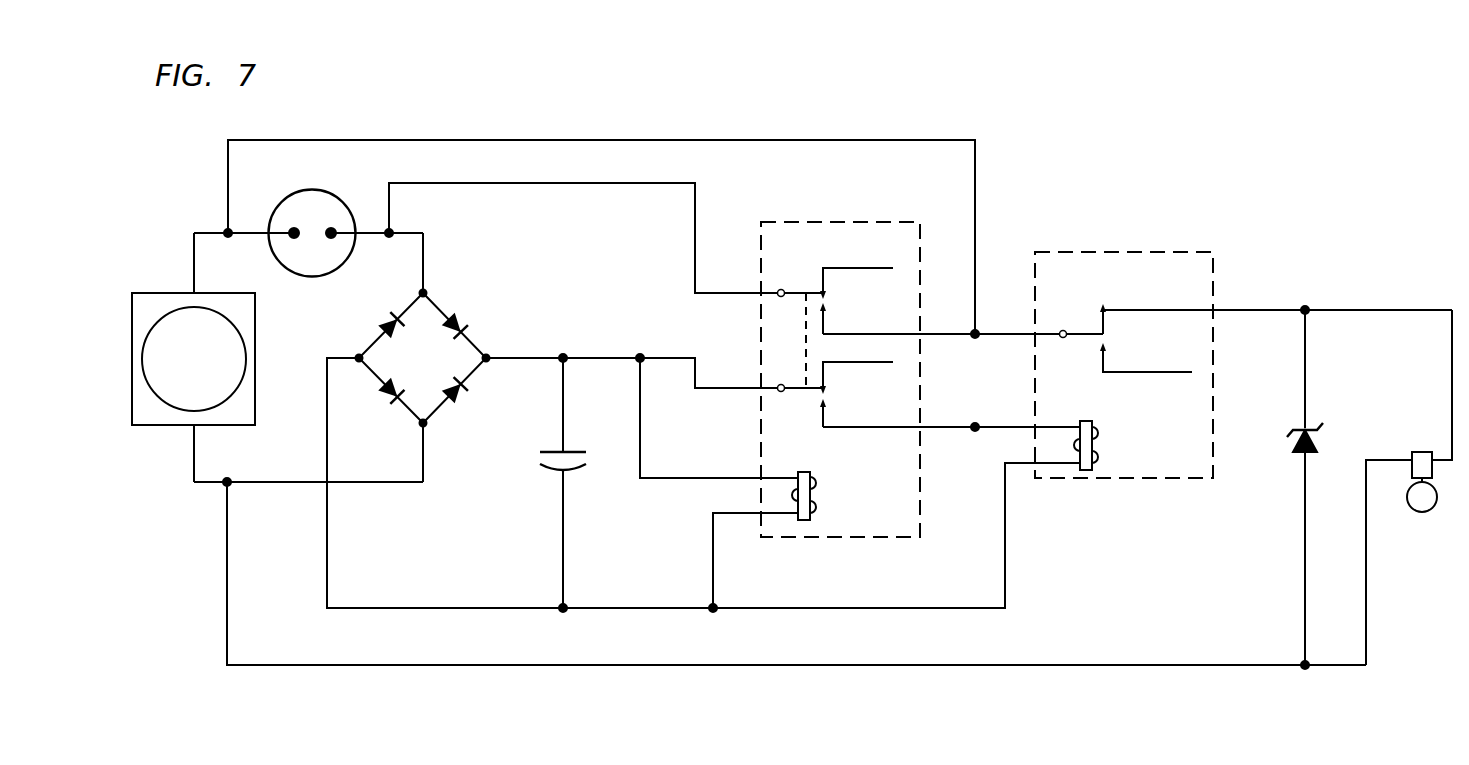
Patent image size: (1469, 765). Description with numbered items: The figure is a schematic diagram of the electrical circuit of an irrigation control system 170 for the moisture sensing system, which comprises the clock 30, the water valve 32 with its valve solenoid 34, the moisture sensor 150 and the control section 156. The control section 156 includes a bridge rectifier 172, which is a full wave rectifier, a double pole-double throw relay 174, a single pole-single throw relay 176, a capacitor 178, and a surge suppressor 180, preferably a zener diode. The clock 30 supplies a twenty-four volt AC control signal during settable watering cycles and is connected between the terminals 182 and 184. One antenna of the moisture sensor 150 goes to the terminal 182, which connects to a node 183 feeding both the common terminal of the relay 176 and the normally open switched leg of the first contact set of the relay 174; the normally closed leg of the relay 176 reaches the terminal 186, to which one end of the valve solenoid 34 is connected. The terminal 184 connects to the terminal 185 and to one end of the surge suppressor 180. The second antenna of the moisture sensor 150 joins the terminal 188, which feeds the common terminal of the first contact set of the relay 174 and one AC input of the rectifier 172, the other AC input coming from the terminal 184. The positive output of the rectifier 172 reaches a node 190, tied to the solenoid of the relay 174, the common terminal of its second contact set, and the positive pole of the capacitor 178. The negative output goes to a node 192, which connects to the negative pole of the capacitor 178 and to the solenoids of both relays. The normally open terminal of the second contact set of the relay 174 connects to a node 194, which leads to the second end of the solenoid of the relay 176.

The clock 30 is at (164, 293).
The water valve 32 is at (1413, 507).
The valve solenoid 34 is at (1413, 452).
The moisture sensor 150 is at (315, 207).
The control section 156 is at (983, 180).
The irrigation control system 170 is at (957, 134).
The bridge rectifier 172 is at (430, 313).
The double pole-double throw relay 174 is at (857, 222).
The single pole-single throw relay 176 is at (1142, 260).
The capacitor 178 is at (544, 459).
The surge suppressor 180 is at (1314, 445).
The terminal 182 is at (228, 236).
The node 183 is at (975, 337).
The terminal 184 is at (228, 480).
The terminal 185 is at (1304, 667).
The terminal 186 is at (1306, 308).
The terminal 188 is at (389, 236).
The node 190 is at (562, 356).
The node 192 is at (562, 612).
The node 194 is at (975, 430).